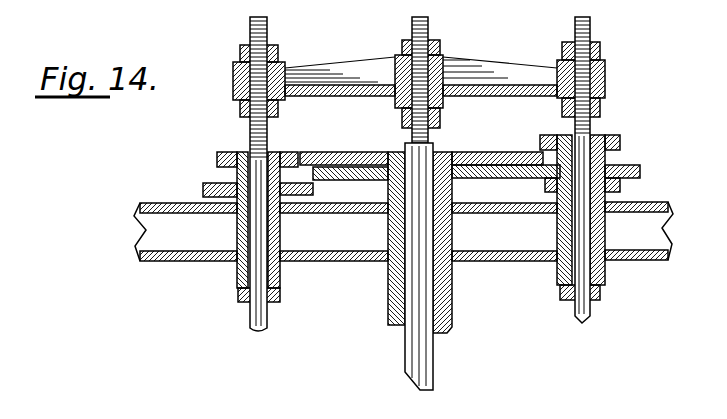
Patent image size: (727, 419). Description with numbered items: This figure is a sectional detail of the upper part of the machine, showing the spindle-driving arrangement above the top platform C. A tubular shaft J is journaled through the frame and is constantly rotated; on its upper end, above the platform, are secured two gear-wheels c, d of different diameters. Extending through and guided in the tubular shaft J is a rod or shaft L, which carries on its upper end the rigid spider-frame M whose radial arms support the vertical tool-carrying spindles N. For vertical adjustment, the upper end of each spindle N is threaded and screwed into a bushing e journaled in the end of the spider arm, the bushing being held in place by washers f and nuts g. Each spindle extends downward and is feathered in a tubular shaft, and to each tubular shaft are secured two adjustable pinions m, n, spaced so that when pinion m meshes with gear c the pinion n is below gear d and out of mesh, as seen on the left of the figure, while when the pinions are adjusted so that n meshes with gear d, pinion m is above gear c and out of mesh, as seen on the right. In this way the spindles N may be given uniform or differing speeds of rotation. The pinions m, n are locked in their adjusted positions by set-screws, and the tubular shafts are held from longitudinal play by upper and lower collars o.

The top platform C is at (403, 231).
The gear-wheel c is at (352, 147).
The gear-wheel d is at (372, 182).
The adjustable pinion m is at (238, 152).
The adjustable pinion n is at (212, 185).
The collar o is at (229, 214).
The tubular shaft J is at (440, 305).
The nut g is at (240, 52).
The bushing e is at (233, 85).
The spider-frame M is at (359, 63).
The washer f is at (276, 63).
The tool-carrying spindle N is at (268, 320).
The rod or shaft L is at (410, 351).